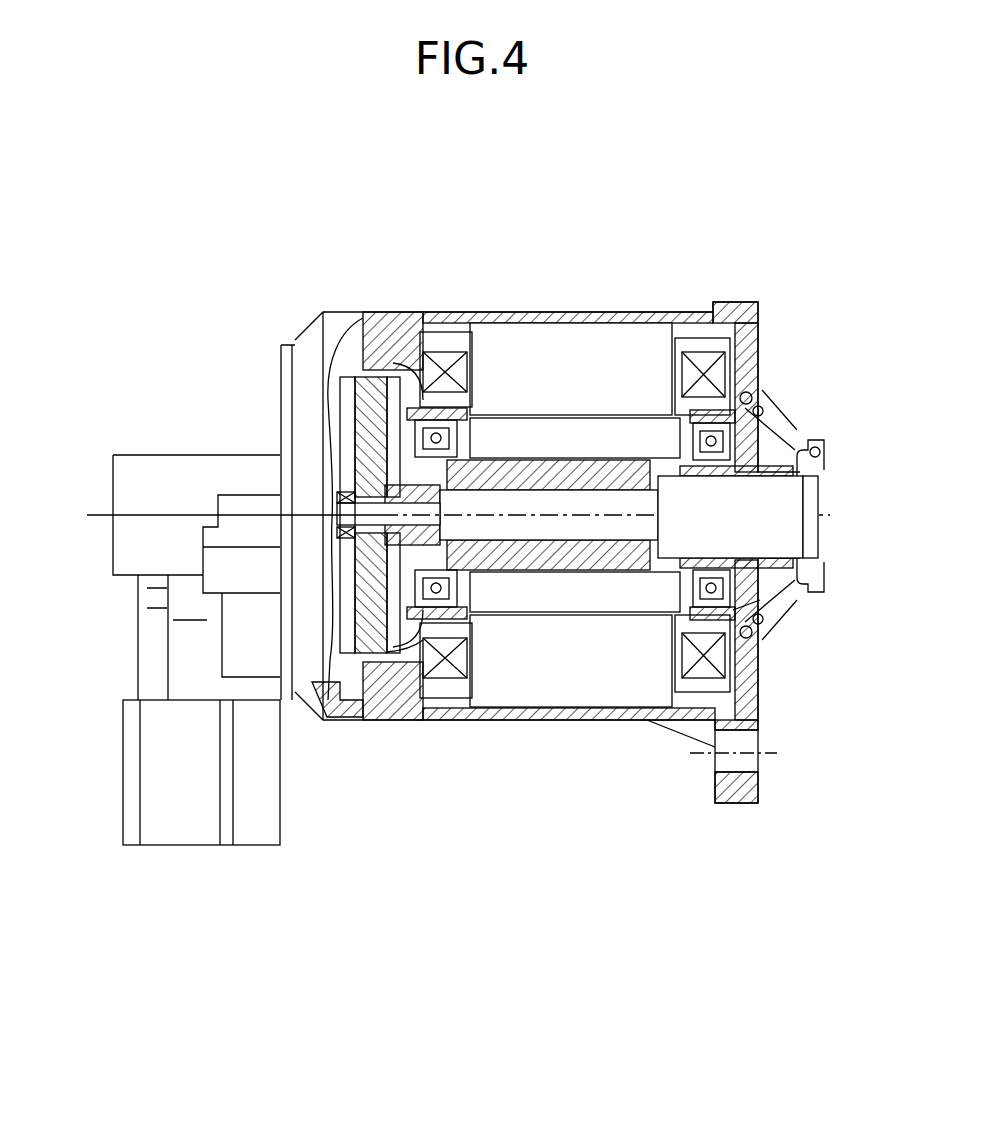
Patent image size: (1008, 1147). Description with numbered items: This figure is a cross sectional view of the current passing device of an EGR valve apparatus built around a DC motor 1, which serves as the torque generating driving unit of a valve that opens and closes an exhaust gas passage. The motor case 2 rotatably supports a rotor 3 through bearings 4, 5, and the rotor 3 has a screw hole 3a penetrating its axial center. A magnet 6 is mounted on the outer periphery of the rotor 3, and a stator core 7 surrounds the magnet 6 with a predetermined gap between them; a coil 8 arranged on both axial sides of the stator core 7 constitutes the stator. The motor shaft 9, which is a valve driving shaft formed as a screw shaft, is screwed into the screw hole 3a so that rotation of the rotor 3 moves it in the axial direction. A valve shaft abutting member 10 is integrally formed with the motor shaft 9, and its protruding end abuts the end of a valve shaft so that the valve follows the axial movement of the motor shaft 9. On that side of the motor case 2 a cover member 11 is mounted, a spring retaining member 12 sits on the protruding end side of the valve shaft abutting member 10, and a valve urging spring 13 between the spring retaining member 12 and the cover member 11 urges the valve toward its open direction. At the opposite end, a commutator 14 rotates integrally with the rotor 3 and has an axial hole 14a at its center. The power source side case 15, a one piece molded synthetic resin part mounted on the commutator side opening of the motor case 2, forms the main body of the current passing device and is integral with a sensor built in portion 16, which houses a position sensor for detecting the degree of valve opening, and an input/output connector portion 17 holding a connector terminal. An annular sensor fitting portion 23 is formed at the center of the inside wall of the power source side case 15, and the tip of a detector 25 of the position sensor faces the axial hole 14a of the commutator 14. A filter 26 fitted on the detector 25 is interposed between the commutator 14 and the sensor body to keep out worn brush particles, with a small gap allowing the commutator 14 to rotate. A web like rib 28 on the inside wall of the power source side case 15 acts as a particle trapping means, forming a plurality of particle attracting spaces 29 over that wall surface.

The DC motor 1 is at (505, 300).
The motor case 2 is at (388, 307).
The rotor 3 is at (530, 470).
The screw hole 3a is at (590, 545).
The bearing 4 is at (470, 605).
The bearing 5 is at (760, 607).
The magnet 6 is at (578, 368).
The stator core 7 is at (613, 440).
The coil 8 is at (441, 350).
The motor shaft 9 is at (528, 525).
The valve shaft abutting member 10 is at (773, 497).
The cover member 11 is at (753, 363).
The spring retaining member 12 is at (805, 452).
The valve urging spring 13 is at (762, 408).
The commutator 14 is at (312, 350).
The axial hole 14a is at (341, 705).
The power source side case 15 is at (268, 387).
The sensor built in portion 16 is at (165, 475).
The input/output connector portion 17 is at (192, 808).
The sensor fitting portion 23 is at (330, 568).
The detector 25 is at (340, 512).
The filter 26 is at (336, 480).
The rib 28 is at (305, 655).
The particle attracting space 29 is at (300, 607).